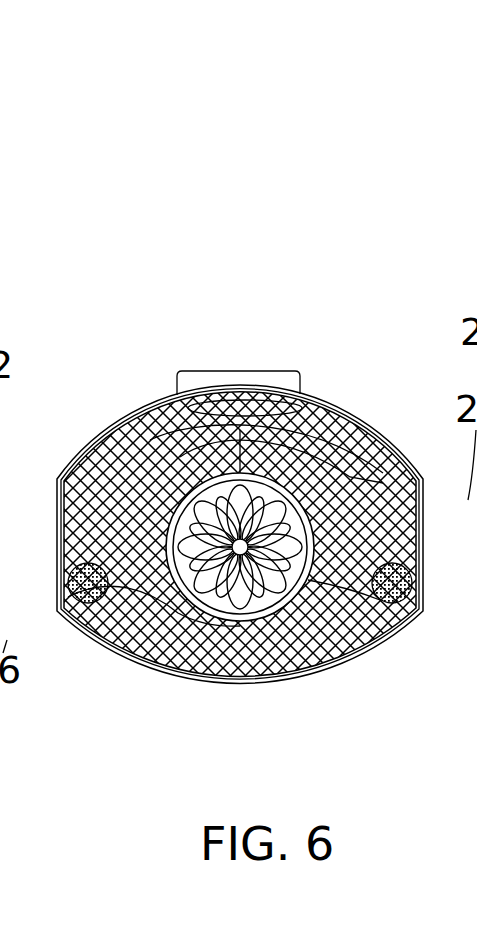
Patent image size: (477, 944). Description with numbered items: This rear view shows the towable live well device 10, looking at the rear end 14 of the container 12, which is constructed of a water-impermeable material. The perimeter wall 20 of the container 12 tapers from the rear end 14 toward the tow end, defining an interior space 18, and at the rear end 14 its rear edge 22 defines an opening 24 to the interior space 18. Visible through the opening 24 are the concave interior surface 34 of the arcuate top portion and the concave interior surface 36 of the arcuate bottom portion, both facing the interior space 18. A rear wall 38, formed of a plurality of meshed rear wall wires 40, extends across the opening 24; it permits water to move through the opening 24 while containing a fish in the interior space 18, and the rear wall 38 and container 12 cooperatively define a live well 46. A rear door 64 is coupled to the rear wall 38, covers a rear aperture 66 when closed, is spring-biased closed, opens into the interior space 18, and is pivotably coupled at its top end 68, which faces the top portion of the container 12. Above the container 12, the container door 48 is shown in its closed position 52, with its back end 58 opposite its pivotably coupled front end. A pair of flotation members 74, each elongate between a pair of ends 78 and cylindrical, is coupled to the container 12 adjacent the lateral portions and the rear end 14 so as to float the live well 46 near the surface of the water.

The towable live well device 10 is at (176, 159).
The container 12 is at (340, 660).
The rear end 14 is at (367, 422).
The interior space 18 is at (176, 653).
The perimeter wall 20 is at (407, 458).
The rear edge 22 is at (133, 663).
The opening 24 is at (261, 671).
The interior surface 34 is at (135, 442).
The interior surface 36 is at (385, 635).
The rear wall 38 is at (103, 650).
The rear wall wires 40 is at (76, 423).
The live well 46 is at (314, 200).
The container door 48 is at (203, 375).
The closed position 52 is at (221, 270).
The back end 58 is at (247, 400).
The rear door 64 is at (240, 628).
The rear aperture 66 is at (286, 592).
The top end 68 is at (322, 422).
The flotation members 74 is at (133, 555).
The ends 78 is at (70, 613).